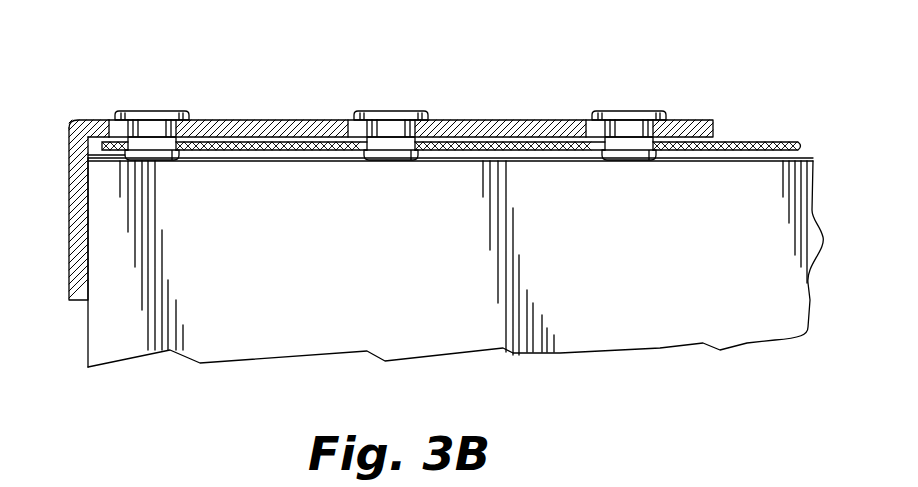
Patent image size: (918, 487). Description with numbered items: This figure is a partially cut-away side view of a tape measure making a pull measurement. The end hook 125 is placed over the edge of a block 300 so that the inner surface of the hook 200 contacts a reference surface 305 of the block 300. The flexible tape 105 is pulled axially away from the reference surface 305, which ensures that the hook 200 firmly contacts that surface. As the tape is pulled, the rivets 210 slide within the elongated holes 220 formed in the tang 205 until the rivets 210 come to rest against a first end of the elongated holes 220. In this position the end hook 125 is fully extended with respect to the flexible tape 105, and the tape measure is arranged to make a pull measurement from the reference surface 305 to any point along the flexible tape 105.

The flexible tape 105 is at (772, 140).
The end hook 125 is at (66, 122).
The hook 200 is at (68, 190).
The tang 205 is at (311, 118).
The rivets 210 is at (638, 118).
The elongated holes 220 is at (585, 120).
The block 300 is at (375, 279).
The reference surface 305 is at (88, 345).